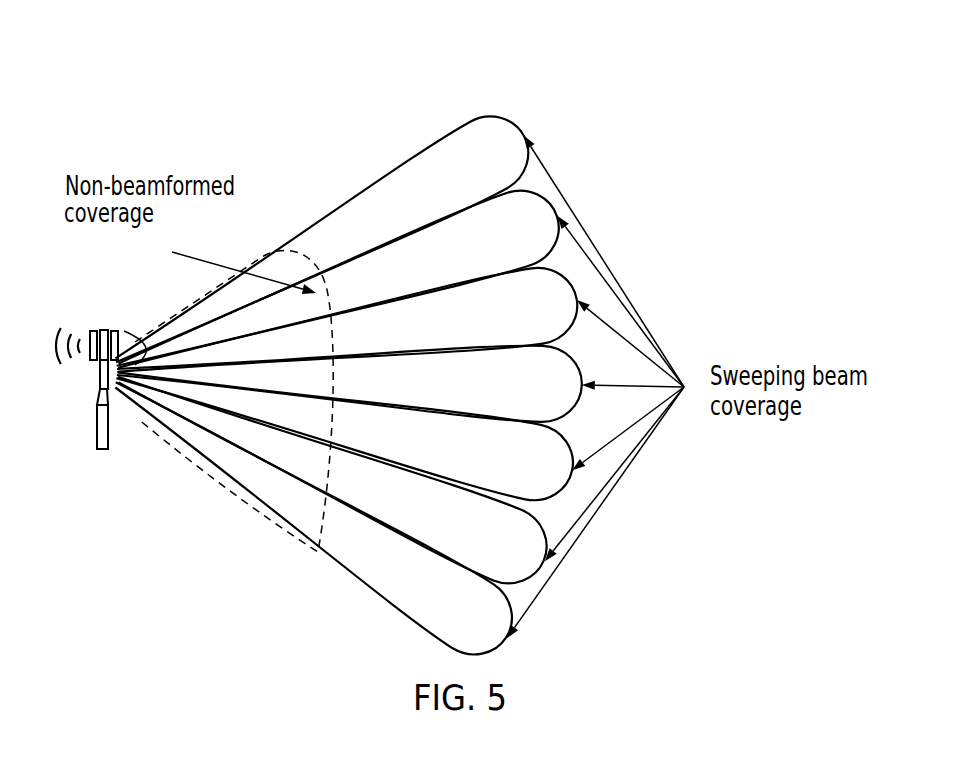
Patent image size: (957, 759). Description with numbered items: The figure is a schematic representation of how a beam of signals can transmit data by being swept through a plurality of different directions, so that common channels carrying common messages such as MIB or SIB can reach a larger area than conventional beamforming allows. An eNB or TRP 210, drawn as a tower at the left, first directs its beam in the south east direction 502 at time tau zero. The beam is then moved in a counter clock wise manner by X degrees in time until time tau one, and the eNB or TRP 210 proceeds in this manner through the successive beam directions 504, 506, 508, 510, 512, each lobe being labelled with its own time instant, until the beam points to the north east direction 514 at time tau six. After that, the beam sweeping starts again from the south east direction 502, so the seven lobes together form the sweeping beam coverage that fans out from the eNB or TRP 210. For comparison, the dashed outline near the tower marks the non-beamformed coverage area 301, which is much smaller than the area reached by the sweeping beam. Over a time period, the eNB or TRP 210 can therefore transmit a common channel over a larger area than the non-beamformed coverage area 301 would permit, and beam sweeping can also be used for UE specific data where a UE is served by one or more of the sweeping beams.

The eNB or TRP 210 is at (100, 451).
The non-beamformed coverage area 301 is at (213, 487).
The south east beam direction 502 is at (377, 590).
The beam direction 504 is at (525, 563).
The beam direction 506 is at (552, 489).
The beam direction 508 is at (563, 377).
The beam direction 510 is at (565, 293).
The beam direction 512 is at (543, 213).
The north east beam direction 514 is at (497, 130).